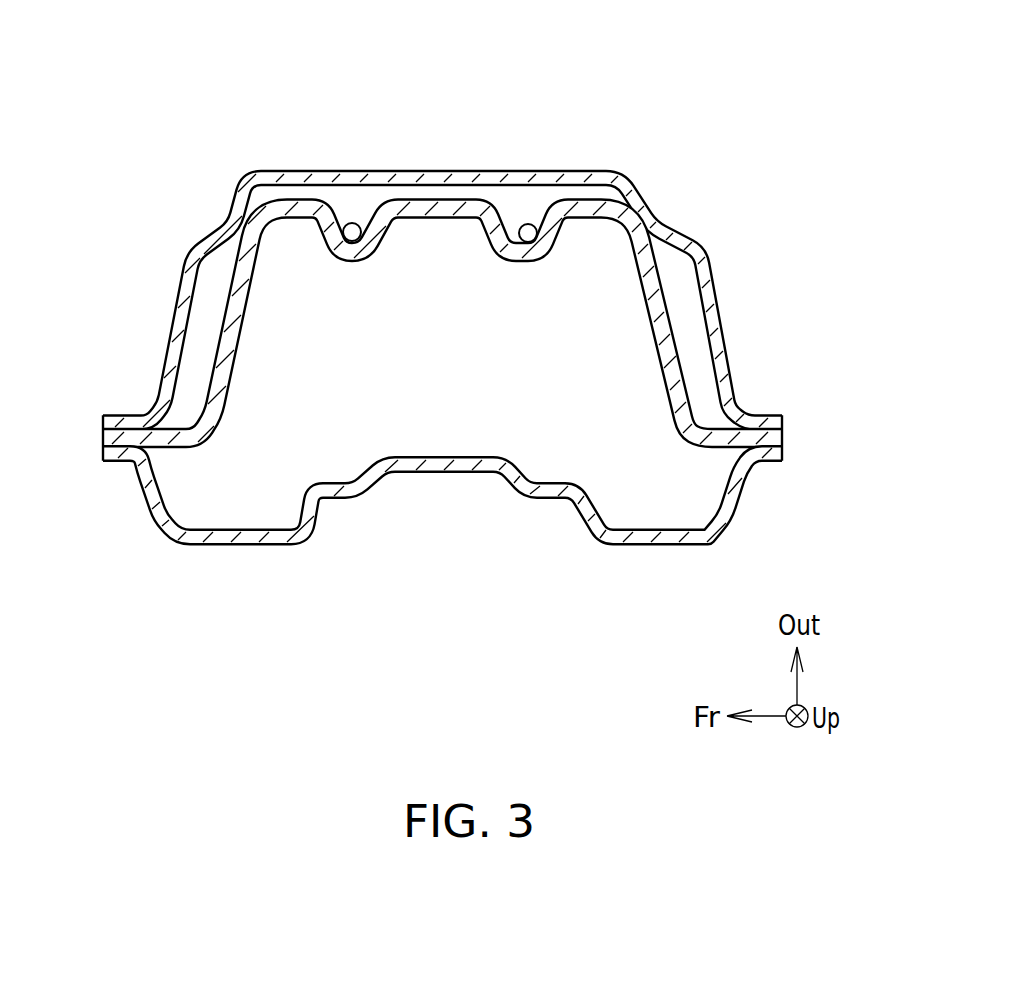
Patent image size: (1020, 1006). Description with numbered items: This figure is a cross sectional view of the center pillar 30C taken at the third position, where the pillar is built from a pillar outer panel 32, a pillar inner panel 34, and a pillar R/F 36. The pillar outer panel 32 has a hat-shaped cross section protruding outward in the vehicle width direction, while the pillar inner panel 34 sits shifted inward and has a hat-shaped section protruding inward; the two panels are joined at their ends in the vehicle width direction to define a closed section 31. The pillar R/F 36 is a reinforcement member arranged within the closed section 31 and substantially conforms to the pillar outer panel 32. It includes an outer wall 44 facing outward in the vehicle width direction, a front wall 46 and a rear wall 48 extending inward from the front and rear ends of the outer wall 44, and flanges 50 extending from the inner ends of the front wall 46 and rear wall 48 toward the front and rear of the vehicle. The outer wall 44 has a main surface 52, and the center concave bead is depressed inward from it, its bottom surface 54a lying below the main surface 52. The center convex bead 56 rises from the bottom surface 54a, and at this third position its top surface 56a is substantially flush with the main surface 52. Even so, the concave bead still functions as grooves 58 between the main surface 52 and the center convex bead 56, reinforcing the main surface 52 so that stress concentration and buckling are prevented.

The center pillar 30C is at (652, 142).
The closed section 31 is at (461, 389).
The pillar outer panel 32 is at (570, 171).
The pillar inner panel 34 is at (668, 546).
The pillar R/F 36 is at (662, 268).
The outer wall 44 is at (417, 228).
The front wall 46 is at (224, 317).
The rear wall 48 is at (663, 307).
The flanges 50 is at (173, 452).
The main surface 52 is at (307, 196).
The bottom surface 54a is at (343, 262).
The center convex bead 56 is at (443, 125).
The top surface 56a is at (440, 197).
The grooves 58 is at (357, 222).